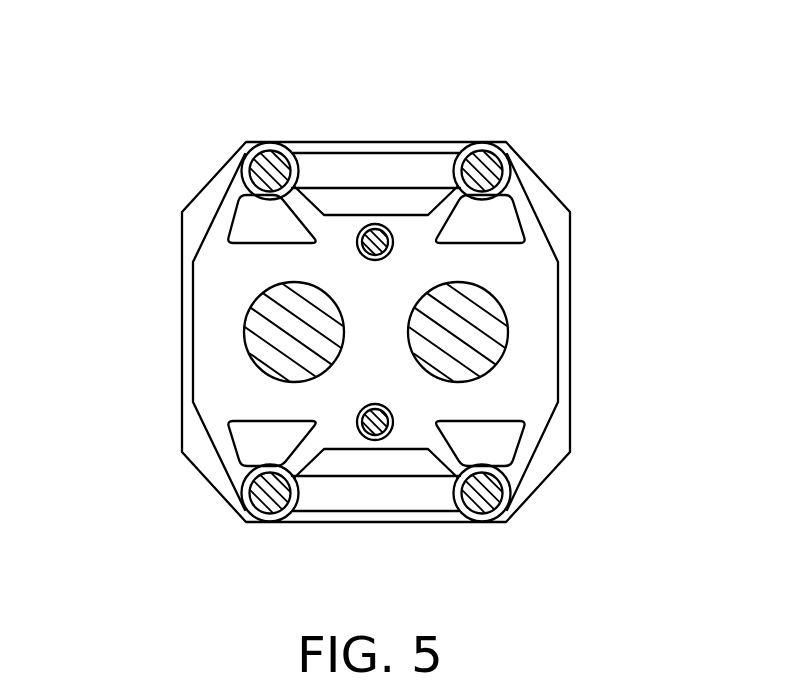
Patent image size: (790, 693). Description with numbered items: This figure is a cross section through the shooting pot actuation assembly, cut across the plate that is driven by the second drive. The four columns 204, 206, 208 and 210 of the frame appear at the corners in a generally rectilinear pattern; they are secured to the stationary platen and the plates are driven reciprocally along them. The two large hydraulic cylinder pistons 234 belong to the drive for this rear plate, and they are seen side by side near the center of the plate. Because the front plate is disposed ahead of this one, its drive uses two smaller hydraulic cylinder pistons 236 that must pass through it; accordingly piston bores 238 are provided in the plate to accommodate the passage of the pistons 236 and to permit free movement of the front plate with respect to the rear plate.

The column 204 is at (265, 165).
The column 206 is at (487, 162).
The column 208 is at (265, 500).
The column 210 is at (485, 500).
The hydraulic cylinder piston 234 is at (433, 337).
The hydraulic cylinder piston 236 is at (370, 237).
The piston bore 238 is at (390, 253).